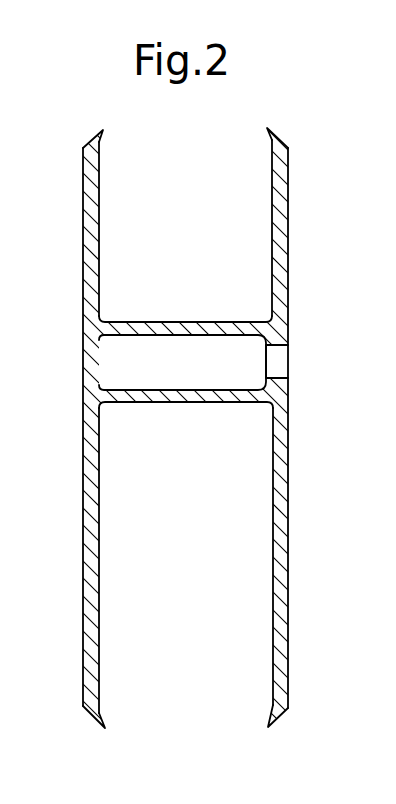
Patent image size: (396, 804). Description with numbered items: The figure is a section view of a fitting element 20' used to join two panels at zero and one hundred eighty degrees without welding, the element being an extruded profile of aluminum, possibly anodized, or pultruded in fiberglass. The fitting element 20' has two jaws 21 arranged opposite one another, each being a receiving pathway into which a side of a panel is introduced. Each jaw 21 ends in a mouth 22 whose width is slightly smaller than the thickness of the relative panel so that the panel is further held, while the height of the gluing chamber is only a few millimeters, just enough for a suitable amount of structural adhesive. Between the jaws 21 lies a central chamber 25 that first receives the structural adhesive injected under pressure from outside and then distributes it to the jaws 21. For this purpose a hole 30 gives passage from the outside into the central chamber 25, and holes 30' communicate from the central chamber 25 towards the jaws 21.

The fitting element 20' is at (198, 418).
The jaw 21 is at (279, 229).
The mouth 22 is at (104, 131).
The central chamber 25 is at (142, 358).
The hole 30 is at (299, 352).
The hole 30' is at (186, 367).